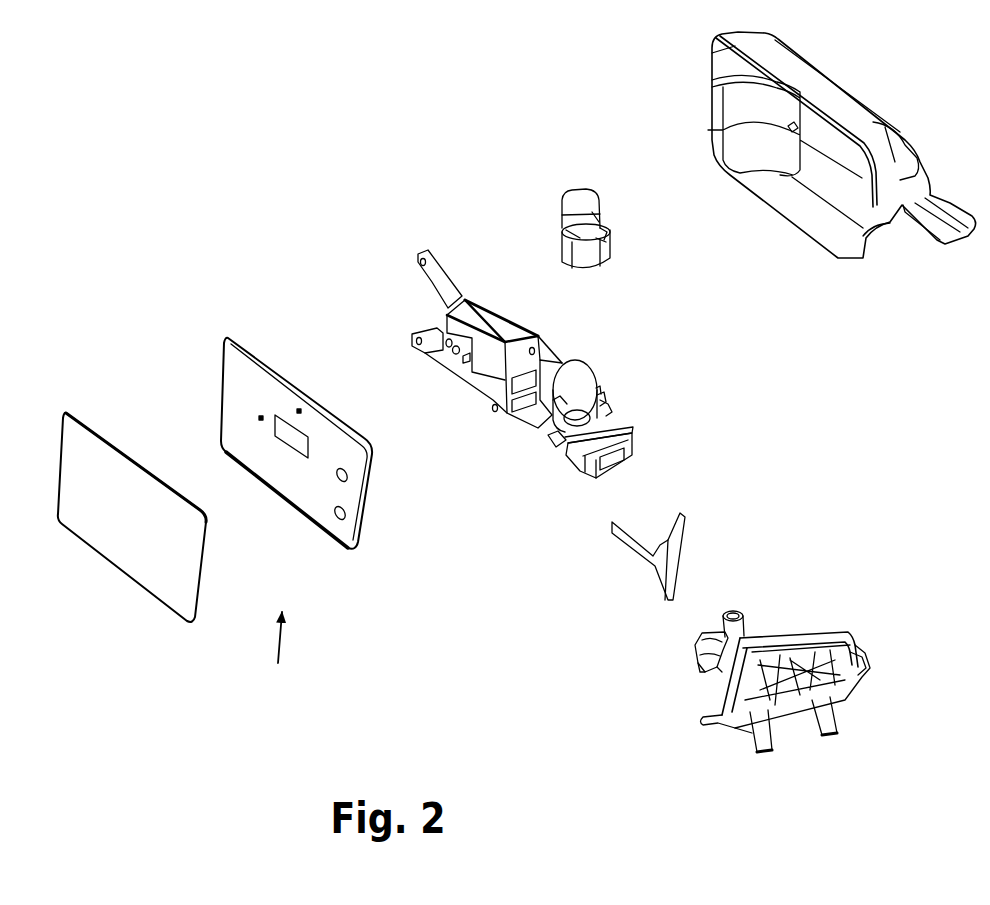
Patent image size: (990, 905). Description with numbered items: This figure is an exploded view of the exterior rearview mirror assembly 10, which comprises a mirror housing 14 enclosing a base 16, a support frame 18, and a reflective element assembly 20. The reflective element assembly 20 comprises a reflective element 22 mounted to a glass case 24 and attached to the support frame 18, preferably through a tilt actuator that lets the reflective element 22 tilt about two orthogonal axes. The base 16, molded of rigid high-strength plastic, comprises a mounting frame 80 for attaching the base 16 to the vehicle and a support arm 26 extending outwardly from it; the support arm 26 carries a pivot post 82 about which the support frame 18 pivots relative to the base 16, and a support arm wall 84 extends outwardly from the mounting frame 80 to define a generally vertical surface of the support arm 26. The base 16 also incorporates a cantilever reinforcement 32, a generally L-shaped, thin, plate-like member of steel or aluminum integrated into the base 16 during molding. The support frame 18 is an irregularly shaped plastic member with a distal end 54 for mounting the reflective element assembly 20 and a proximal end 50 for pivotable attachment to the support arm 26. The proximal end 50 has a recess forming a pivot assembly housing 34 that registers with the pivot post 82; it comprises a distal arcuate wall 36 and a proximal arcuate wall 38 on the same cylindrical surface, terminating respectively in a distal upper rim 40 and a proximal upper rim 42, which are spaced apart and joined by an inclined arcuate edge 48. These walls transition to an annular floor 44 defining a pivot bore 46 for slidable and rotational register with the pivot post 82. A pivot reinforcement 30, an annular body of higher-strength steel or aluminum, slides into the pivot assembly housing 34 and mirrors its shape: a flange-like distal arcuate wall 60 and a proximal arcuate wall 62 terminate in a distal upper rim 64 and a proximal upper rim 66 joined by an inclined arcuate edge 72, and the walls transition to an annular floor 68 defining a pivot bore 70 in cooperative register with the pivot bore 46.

The exterior rearview mirror assembly 10 is at (259, 154).
The mirror housing 14 is at (854, 89).
The base 16 is at (740, 693).
The support frame 18 is at (473, 291).
The reflective element assembly 20 is at (275, 653).
The reflective element 22 is at (147, 583).
The glass case 24 is at (337, 530).
The support arm 26 is at (706, 681).
The pivot reinforcement 30 is at (591, 195).
The cantilever reinforcement 32 is at (678, 558).
The pivot assembly housing 34 is at (600, 391).
The distal arcuate wall 36 is at (600, 393).
The proximal arcuate wall 38 is at (604, 400).
The distal upper rim 40 is at (575, 385).
The proximal upper rim 42 is at (634, 428).
The annular floor 44 is at (577, 433).
The pivot bore 46 is at (553, 440).
The inclined arcuate edge 48 is at (556, 400).
The proximal end 50 is at (625, 463).
The distal end 54 is at (408, 329).
The distal arcuate wall 60 is at (584, 221).
The proximal arcuate wall 62 is at (600, 255).
The distal upper rim 64 is at (563, 198).
The proximal upper rim 66 is at (606, 242).
The annular floor 68 is at (605, 233).
The pivot bore 70 is at (568, 233).
The inclined arcuate edge 72 is at (593, 210).
The mounting frame 80 is at (725, 727).
The pivot post 82 is at (722, 630).
The support arm wall 84 is at (704, 668).